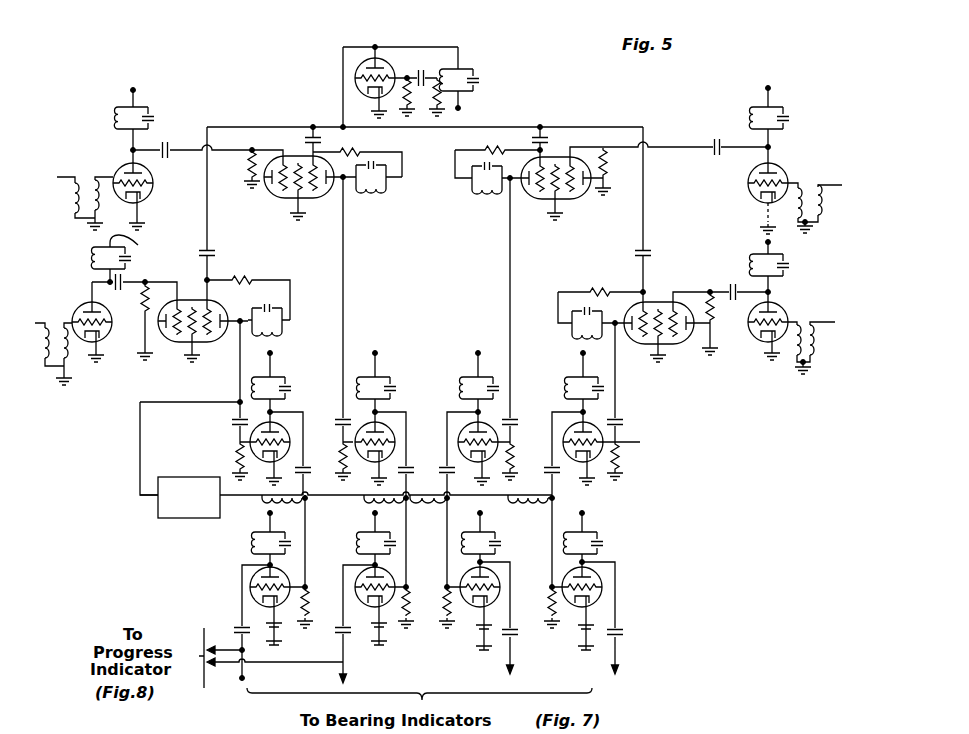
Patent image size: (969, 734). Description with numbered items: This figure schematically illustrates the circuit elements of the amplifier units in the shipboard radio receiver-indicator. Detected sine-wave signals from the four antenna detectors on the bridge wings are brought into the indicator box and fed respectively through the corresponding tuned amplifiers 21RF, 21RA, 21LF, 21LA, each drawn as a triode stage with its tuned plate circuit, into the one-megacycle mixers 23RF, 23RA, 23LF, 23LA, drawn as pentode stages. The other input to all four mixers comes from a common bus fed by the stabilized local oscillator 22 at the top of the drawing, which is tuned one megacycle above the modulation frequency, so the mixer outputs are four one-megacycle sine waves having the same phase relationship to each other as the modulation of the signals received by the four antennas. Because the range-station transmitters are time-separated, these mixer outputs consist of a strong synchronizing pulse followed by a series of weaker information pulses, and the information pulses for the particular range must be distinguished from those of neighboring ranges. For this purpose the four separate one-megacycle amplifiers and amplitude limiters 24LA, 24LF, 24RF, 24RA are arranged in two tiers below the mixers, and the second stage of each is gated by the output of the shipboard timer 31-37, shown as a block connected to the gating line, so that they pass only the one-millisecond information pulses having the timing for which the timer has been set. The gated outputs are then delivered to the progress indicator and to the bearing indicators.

The stabilized local oscillator 22 is at (512, 51).
The tuned amplifier 21LF is at (145, 155).
The mixer 23LF is at (275, 197).
The mixer 23RF is at (566, 200).
The tuned amplifier 21RF is at (778, 168).
The tuned amplifier 21LA is at (102, 313).
The mixer 23LA is at (180, 343).
The mixer 23RA is at (668, 345).
The tuned amplifier 21RA is at (786, 306).
The amplifier and amplitude limiter 24LA is at (293, 412).
The amplifier and amplitude limiter 24LF is at (388, 412).
The amplifier and amplitude limiter 24RF is at (457, 412).
The amplifier and amplitude limiter 24RA is at (606, 562).
The shipboard timer 31-37 is at (180, 518).